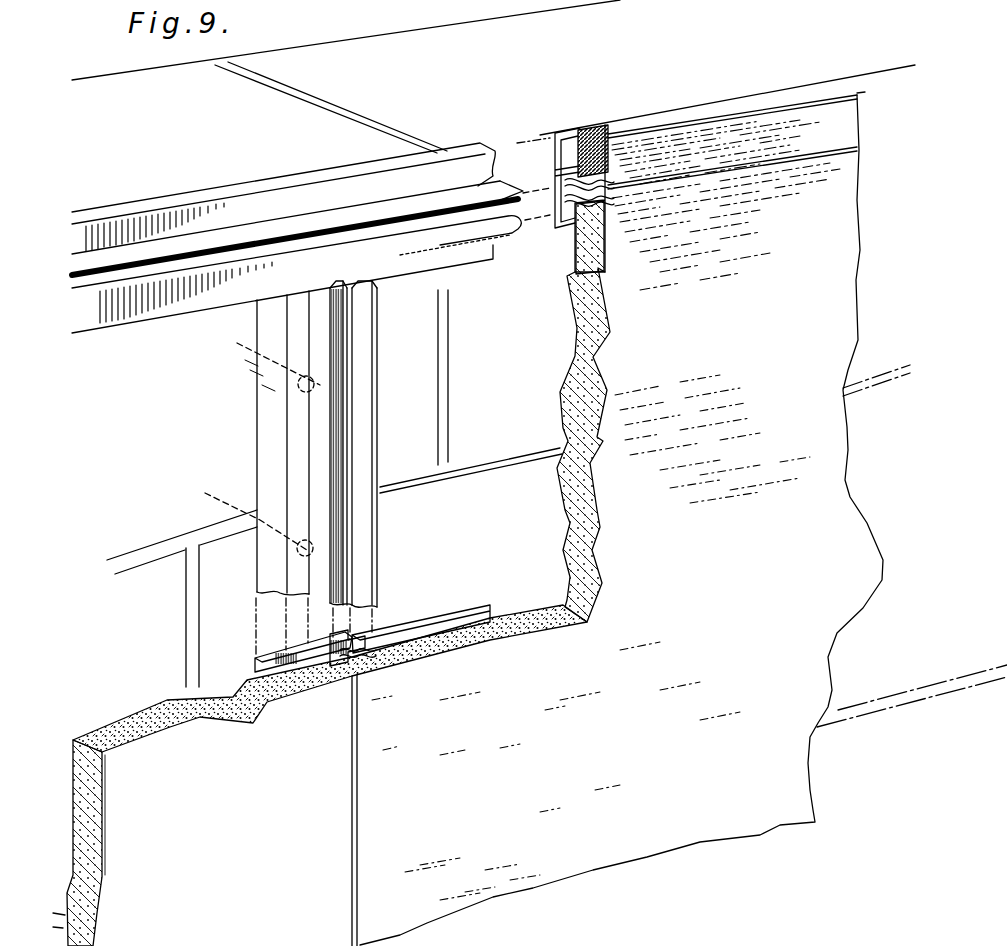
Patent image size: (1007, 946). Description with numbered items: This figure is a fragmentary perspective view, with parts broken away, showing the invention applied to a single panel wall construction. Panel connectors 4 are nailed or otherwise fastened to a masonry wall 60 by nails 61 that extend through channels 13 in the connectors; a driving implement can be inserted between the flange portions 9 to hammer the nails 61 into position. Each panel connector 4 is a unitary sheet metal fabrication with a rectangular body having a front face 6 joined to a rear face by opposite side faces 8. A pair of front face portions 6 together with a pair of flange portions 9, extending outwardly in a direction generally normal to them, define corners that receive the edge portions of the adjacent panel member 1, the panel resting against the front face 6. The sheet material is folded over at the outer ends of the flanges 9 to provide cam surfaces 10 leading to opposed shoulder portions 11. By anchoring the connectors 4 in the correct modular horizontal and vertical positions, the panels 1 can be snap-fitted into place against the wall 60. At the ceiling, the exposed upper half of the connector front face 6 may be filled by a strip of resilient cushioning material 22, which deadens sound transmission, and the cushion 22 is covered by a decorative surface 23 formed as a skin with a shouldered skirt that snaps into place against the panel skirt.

The panel member 1 is at (759, 580).
The panel connector 4 is at (512, 240).
The front face 6 is at (453, 178).
The side face 8 is at (424, 151).
The flange portion 9 is at (480, 186).
The cam surface 10 is at (362, 308).
The shoulder portion 11 is at (347, 487).
The channel 13 is at (340, 550).
The cushioning material 22 is at (652, 119).
The decorative surface 23 is at (787, 112).
The masonry wall 60 is at (493, 382).
The nail 61 is at (243, 519).